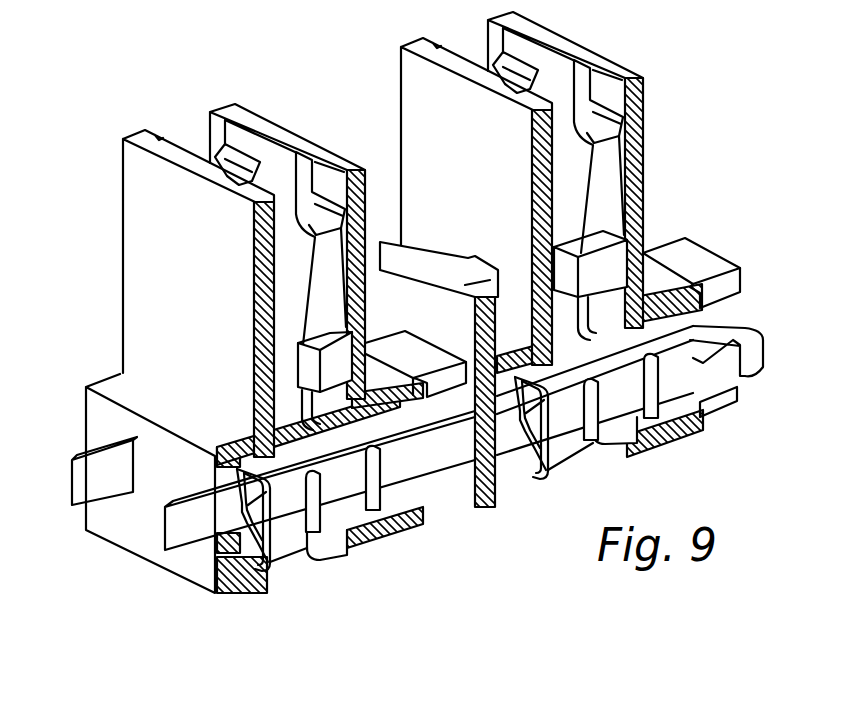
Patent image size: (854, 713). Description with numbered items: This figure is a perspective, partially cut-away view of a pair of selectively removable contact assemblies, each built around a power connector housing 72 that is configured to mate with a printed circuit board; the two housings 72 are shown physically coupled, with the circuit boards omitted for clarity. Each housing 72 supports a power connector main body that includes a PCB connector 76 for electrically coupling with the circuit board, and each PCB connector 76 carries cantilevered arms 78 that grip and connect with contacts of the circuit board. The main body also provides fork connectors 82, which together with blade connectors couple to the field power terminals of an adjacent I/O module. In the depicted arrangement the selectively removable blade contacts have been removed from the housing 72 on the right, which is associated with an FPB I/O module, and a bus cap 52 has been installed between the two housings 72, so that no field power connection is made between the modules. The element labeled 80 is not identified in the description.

The bus cap 52 is at (462, 348).
The power connector housing 72 is at (173, 233).
The PCB connector 76 is at (281, 110).
The cantilevered arms 78 is at (292, 232).
The terminal bar 80 is at (188, 523).
The fork connector 82 is at (445, 450).